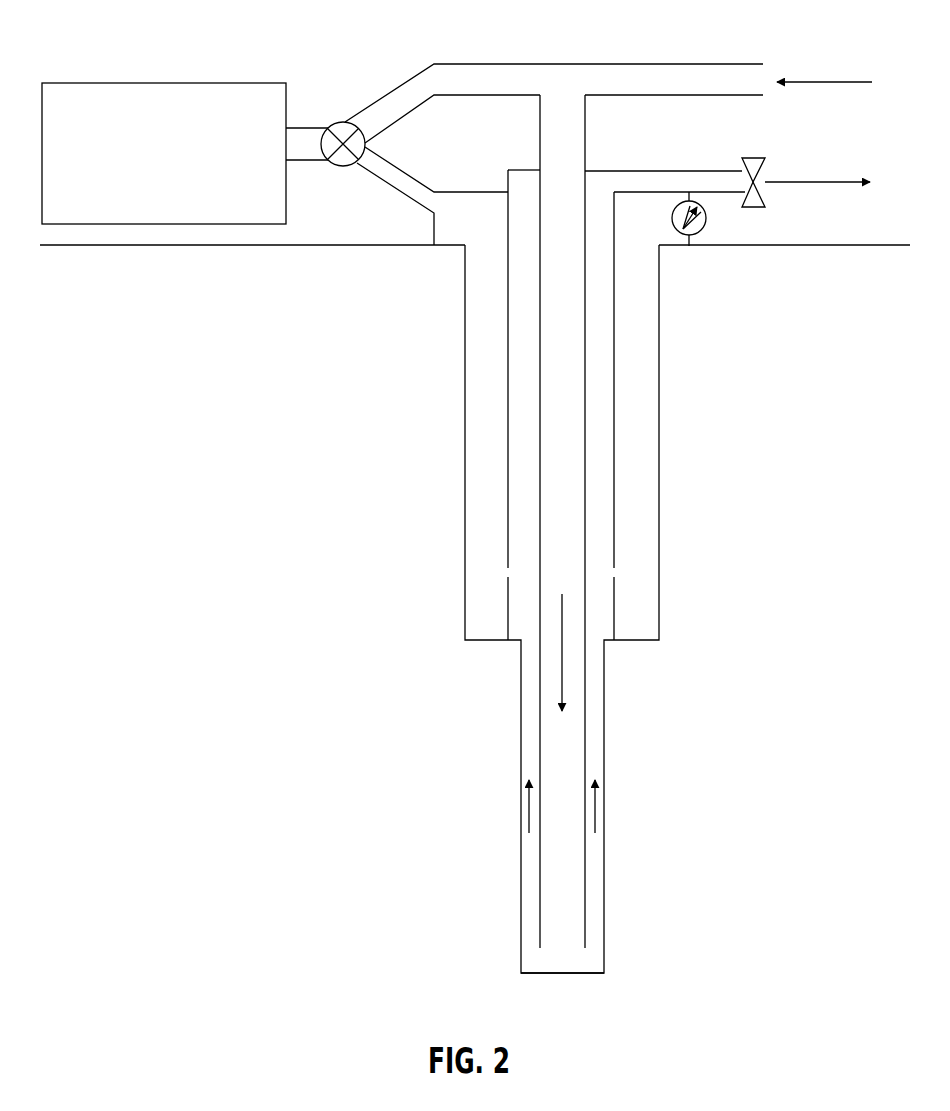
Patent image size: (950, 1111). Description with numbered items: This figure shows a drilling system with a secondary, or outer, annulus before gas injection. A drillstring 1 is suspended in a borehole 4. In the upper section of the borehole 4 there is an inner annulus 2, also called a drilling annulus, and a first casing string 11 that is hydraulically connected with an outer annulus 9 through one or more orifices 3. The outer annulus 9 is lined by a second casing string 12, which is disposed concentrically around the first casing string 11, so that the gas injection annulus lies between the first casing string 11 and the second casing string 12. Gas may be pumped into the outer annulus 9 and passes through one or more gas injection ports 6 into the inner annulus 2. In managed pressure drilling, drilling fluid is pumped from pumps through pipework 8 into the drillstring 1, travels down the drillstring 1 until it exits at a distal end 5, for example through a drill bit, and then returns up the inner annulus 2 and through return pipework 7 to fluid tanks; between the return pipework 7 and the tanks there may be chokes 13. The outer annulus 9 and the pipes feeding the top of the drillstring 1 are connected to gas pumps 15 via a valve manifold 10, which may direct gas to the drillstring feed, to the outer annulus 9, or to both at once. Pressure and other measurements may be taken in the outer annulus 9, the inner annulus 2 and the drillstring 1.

The drillstring 1 is at (585, 455).
The inner annulus 2 is at (596, 512).
The orifices 3 is at (621, 567).
The borehole 4 is at (601, 761).
The distal end 5 is at (561, 939).
The gas injection ports 6 is at (706, 215).
The return pipework 7 is at (690, 169).
The pipework 8 is at (690, 80).
The outer annulus 9 is at (636, 360).
The valve manifold 10 is at (343, 122).
The first casing string 11 is at (510, 412).
The second casing string 12 is at (465, 518).
The chokes 13 is at (753, 208).
The gas pumps 15 is at (80, 83).